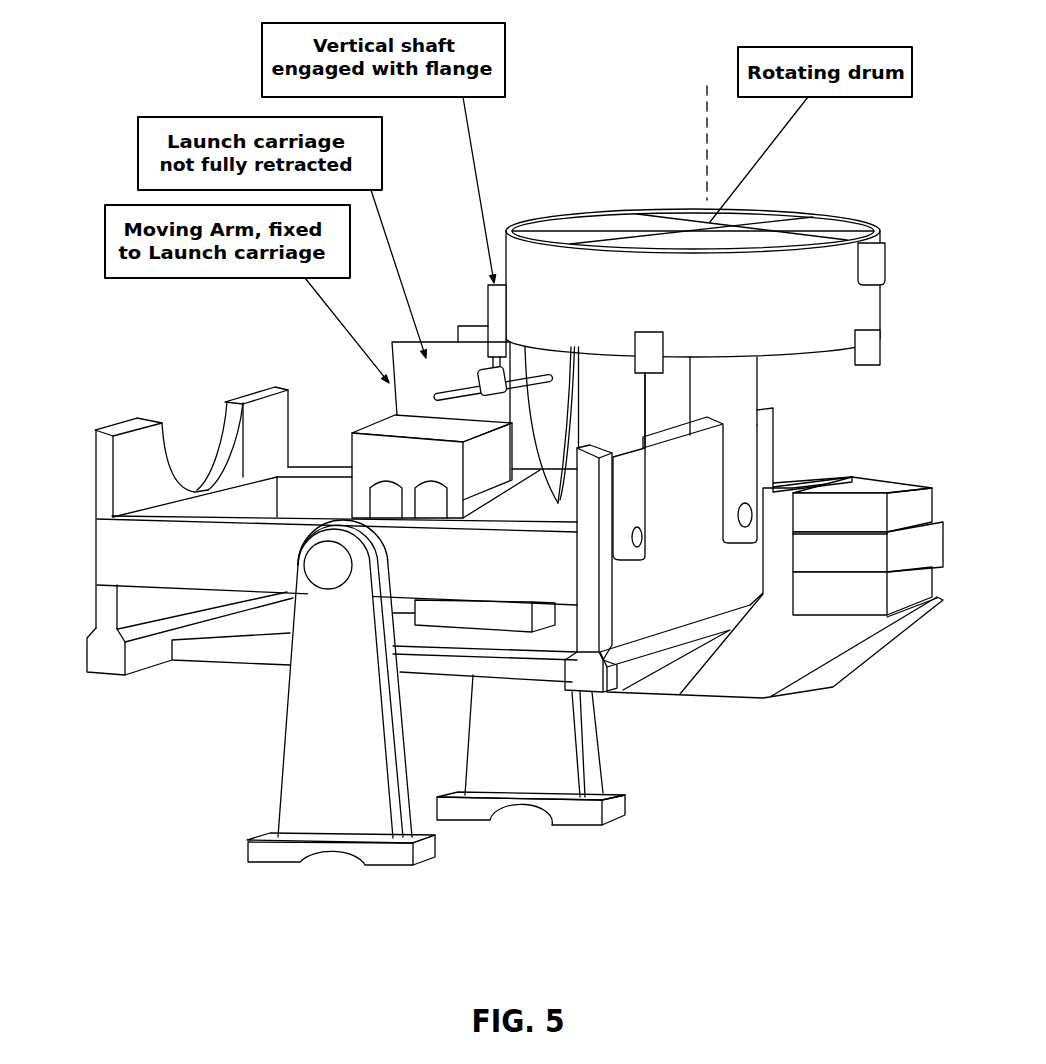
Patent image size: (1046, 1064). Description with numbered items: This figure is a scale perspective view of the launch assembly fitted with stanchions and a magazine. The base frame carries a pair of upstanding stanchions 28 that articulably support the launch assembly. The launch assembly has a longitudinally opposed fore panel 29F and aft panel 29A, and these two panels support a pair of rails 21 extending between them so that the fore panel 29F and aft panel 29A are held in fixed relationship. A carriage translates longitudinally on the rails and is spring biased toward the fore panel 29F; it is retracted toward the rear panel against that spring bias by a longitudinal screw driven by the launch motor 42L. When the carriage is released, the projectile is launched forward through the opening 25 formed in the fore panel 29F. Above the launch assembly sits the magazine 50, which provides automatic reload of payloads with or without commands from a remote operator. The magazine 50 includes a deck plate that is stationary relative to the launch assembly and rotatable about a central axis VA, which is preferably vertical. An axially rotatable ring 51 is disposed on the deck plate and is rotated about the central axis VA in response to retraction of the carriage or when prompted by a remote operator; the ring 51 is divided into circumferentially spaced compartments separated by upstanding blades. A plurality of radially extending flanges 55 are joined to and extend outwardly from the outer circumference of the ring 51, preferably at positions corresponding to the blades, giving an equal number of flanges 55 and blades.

The rail 21 is at (138, 565).
The opening 25 is at (200, 438).
The upstanding stanchion 28 is at (363, 752).
The fore panel 29F is at (98, 477).
The aft panel 29A is at (618, 582).
The launch motor 42L is at (890, 480).
The magazine 50 is at (919, 271).
The ring 51 is at (877, 262).
The flange 55 is at (650, 360).
The central axis VA is at (707, 130).